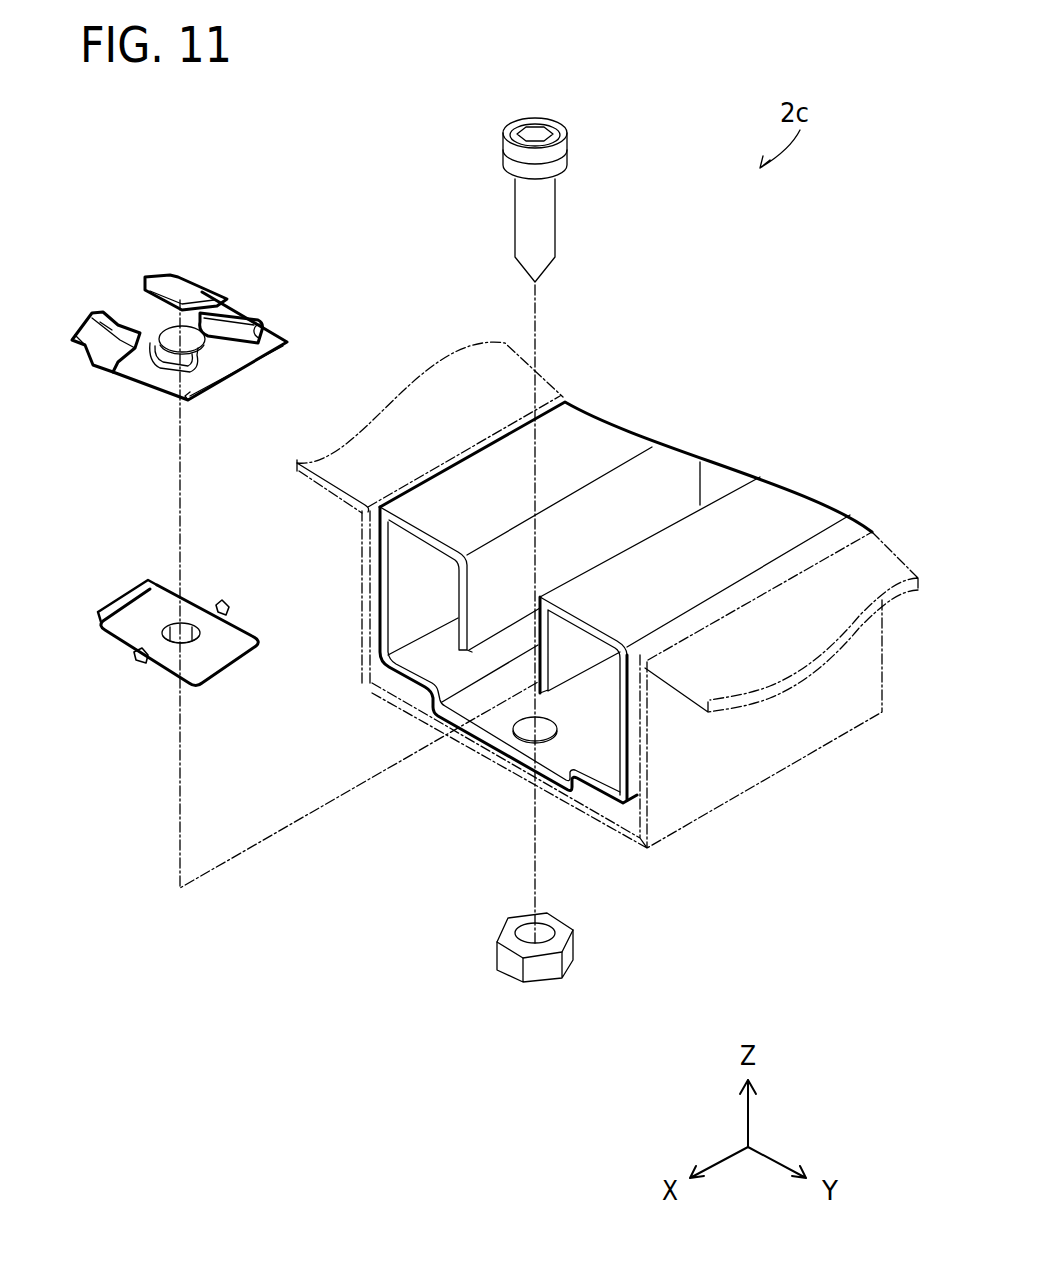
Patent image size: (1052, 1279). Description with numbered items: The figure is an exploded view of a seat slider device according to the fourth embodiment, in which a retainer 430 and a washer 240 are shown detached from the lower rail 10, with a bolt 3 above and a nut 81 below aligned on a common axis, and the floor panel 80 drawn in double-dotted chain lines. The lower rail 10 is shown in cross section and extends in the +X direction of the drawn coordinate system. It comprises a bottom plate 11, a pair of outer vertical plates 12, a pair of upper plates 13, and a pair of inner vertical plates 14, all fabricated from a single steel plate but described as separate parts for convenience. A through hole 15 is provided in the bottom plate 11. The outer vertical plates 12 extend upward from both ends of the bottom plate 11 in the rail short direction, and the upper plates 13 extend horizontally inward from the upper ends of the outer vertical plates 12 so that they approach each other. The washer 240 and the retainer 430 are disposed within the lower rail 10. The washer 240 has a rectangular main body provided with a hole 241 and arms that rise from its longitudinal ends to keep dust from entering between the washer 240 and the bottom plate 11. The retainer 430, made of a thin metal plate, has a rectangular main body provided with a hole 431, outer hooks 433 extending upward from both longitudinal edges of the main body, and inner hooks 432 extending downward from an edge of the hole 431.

The bolt 3 is at (545, 203).
The lower rail 10 is at (625, 346).
The bottom plate 11 is at (540, 752).
The outer vertical plates 12 is at (383, 620).
The upper plates 13 is at (600, 452).
The inner vertical plates 14 is at (463, 578).
The through hole 15 is at (512, 722).
The floor panel 80 is at (868, 570).
The nut 81 is at (510, 965).
The washer 240 is at (179, 332).
The hole 241 is at (167, 325).
The retainer 430 is at (222, 652).
The hole 431 is at (175, 621).
The inner hooks 432 is at (192, 622).
The outer hooks 433 is at (223, 603).